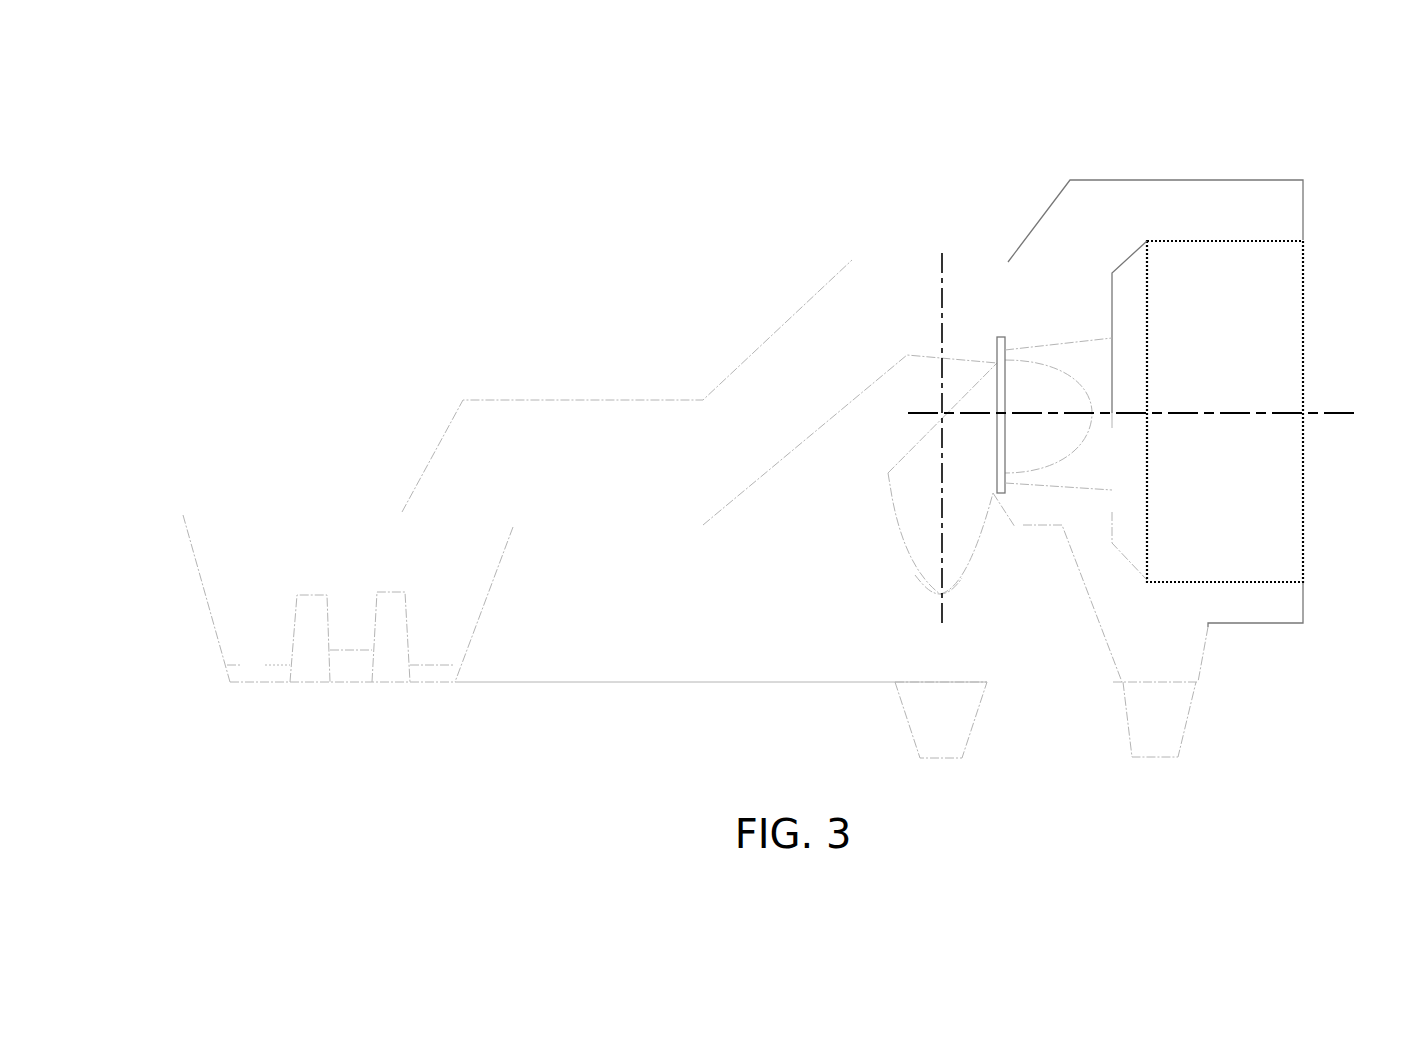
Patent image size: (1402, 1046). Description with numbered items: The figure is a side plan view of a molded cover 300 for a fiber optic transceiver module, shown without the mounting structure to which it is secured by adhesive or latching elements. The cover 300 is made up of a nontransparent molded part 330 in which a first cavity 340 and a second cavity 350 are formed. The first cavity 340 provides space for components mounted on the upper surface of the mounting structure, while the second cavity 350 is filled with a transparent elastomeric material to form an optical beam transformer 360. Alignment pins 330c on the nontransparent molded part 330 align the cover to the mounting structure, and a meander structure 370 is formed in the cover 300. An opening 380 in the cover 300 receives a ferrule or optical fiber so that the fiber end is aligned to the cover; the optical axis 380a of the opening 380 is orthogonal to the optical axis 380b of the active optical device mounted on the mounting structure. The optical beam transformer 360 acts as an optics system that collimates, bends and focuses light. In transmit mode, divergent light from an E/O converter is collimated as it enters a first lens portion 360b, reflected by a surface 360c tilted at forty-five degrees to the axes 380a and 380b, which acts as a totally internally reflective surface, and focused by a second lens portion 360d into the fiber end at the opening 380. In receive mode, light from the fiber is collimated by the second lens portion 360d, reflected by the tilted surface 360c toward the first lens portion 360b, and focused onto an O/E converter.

The molded cover 300 is at (403, 213).
The nontransparent molded part 330 is at (667, 408).
The alignment pins 330c is at (967, 720).
The first cavity 340 is at (579, 549).
The second cavity 350 is at (914, 504).
The optical beam transformer 360 is at (988, 458).
The first lens portion 360b is at (953, 590).
The tilted surface 360c is at (922, 437).
The second lens portion 360d is at (1093, 417).
The meander structure 370 is at (293, 613).
The opening 380 is at (1303, 297).
The optical axis of the opening 380a is at (1022, 412).
The optical axis of the active optical device 380b is at (942, 303).